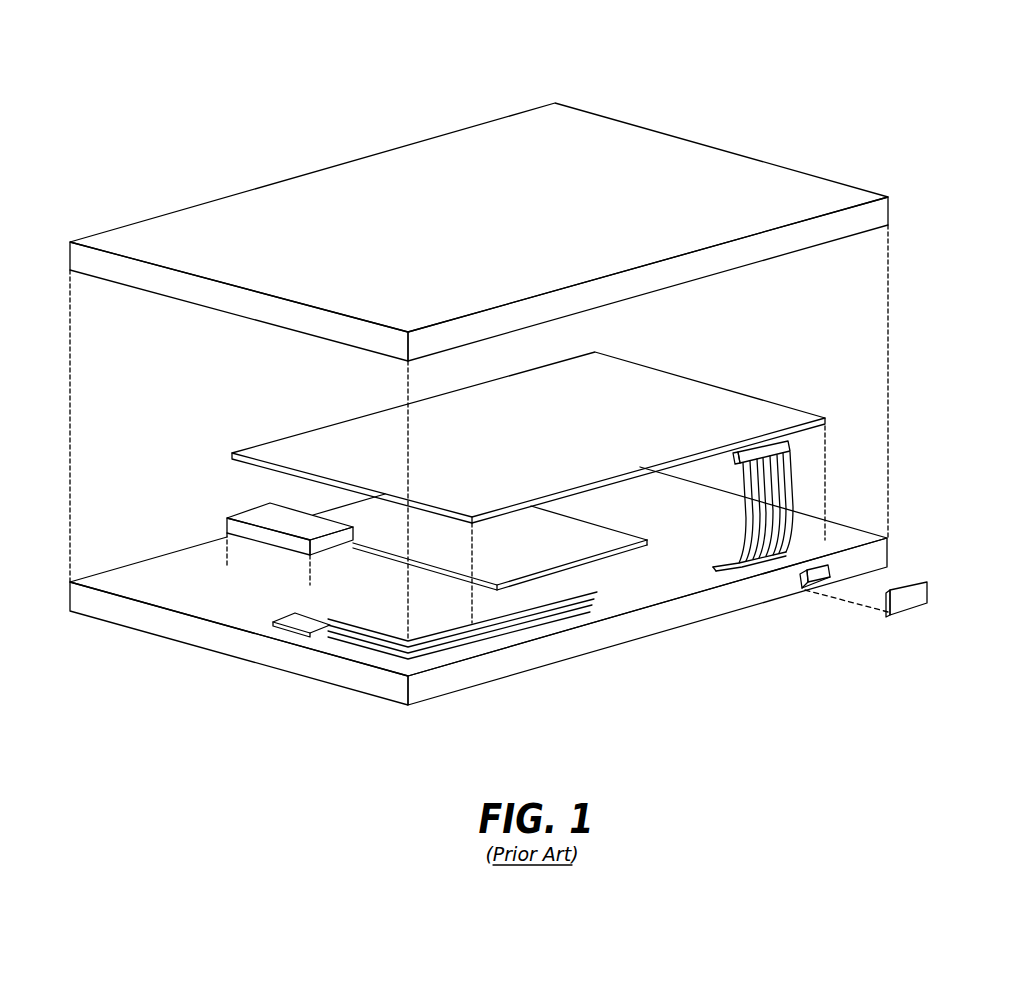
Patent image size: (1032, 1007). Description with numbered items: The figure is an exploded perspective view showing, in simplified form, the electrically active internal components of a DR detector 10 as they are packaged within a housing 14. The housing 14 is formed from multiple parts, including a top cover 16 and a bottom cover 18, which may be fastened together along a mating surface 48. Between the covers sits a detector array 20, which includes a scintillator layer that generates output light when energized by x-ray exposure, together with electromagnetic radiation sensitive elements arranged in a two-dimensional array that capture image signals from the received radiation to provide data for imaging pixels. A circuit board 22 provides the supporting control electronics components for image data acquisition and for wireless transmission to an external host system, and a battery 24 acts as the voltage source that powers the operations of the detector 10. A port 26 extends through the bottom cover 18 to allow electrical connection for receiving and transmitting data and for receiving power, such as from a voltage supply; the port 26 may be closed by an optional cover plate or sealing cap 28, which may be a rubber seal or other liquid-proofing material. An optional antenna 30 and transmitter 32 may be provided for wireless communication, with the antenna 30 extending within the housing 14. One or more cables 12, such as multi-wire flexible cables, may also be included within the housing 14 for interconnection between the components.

The DR detector 10 is at (156, 141).
The cable 12 is at (793, 480).
The housing 14 is at (530, 211).
The top cover 16 is at (888, 212).
The bottom cover 18 is at (478, 591).
The detector array 20 is at (728, 388).
The circuit board 22 is at (648, 541).
The battery 24 is at (226, 517).
The port 26 is at (803, 590).
The sealing cap 28 is at (910, 617).
The antenna 30 is at (537, 620).
The transmitter 32 is at (311, 633).
The mating surface 48 is at (139, 562).